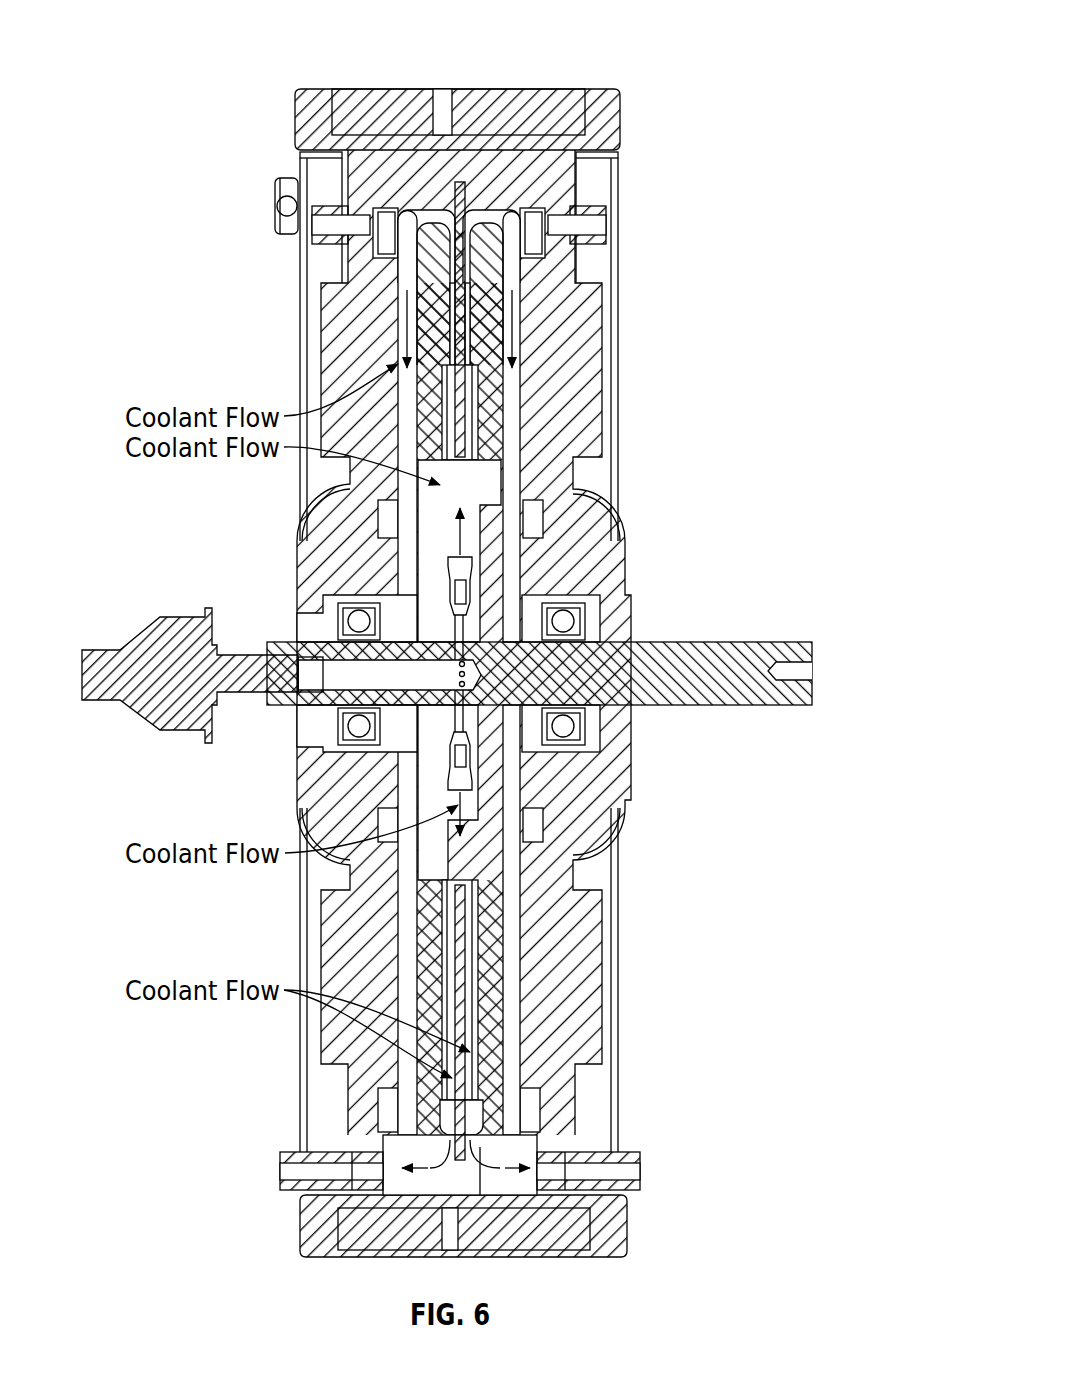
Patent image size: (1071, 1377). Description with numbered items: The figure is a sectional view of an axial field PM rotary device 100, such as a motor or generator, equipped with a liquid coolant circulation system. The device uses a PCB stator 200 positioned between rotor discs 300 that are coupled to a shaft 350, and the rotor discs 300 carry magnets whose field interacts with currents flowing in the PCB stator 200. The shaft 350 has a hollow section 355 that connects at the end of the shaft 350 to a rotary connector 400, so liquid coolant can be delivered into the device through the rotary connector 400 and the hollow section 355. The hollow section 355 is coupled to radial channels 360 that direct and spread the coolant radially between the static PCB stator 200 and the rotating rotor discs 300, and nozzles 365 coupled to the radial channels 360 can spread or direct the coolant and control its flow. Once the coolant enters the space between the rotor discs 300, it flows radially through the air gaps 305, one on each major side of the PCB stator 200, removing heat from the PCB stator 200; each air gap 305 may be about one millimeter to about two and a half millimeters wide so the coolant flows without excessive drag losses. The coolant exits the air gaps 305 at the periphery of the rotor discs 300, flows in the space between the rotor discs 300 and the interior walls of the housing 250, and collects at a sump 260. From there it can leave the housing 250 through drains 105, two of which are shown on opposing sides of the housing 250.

The axial field PM rotary device 100 is at (709, 37).
The drain 105 is at (276, 1168).
The PCB stator 200 is at (454, 330).
The housing 250 is at (356, 150).
The sump 260 is at (534, 1143).
The rotor disc 300 is at (482, 343).
The air gap 305 is at (405, 372).
The shaft 350 is at (744, 638).
The hollow section 355 is at (485, 690).
The radial channel 360 is at (472, 634).
The nozzle 365 is at (444, 572).
The rotary connector 400 is at (136, 670).